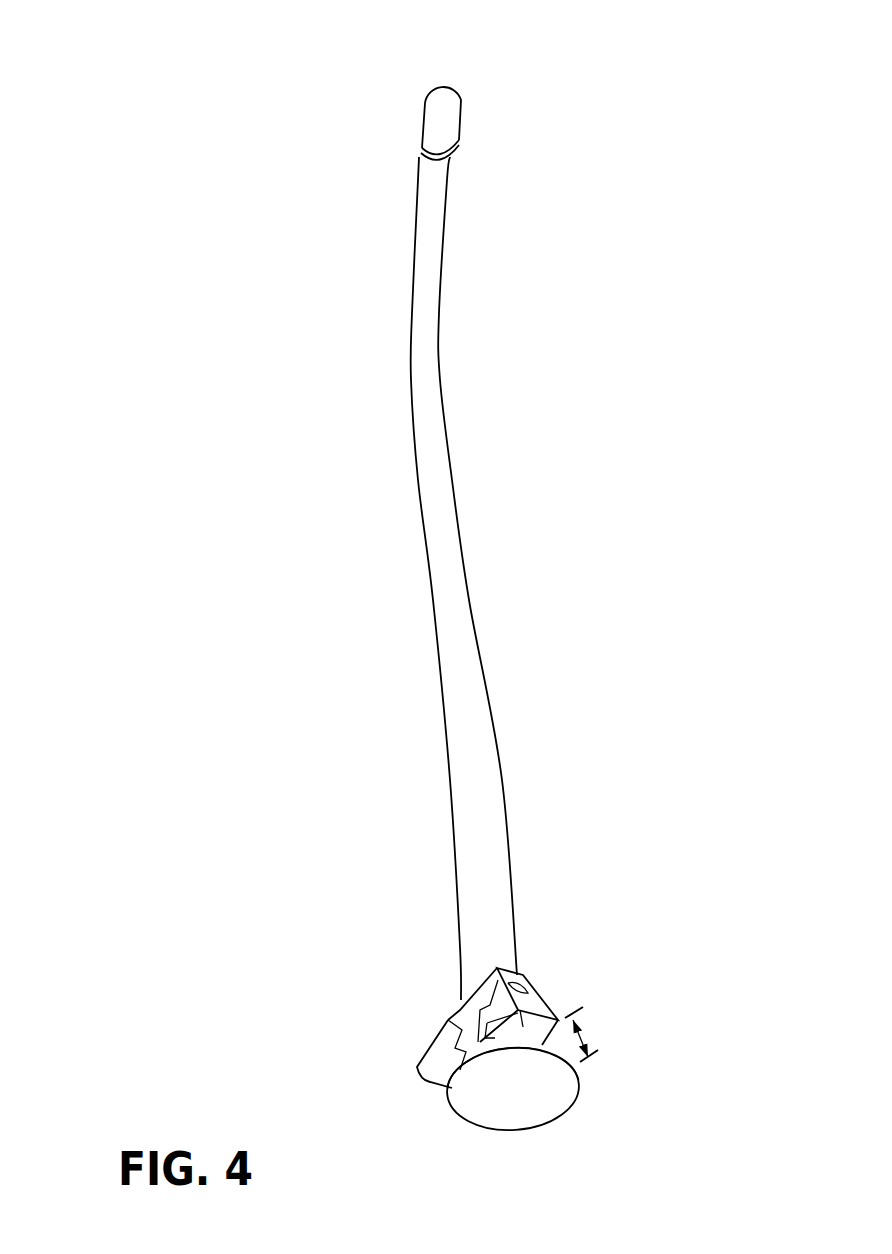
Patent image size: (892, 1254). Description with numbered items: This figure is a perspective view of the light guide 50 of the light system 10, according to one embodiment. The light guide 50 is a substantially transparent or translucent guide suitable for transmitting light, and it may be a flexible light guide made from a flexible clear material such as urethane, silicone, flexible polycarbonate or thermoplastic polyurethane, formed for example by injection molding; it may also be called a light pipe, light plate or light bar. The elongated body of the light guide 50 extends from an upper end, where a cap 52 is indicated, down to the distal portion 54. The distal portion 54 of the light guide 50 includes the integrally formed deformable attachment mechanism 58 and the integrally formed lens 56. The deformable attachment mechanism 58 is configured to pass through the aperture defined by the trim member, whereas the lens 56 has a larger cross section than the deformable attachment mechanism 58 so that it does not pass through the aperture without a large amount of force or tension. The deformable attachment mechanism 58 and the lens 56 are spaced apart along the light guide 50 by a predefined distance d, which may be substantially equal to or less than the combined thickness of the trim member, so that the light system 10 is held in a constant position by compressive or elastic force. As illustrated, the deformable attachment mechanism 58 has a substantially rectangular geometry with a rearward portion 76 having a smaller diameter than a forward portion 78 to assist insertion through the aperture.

The light system 10 is at (553, 338).
The light guide 50 is at (443, 573).
The mast tip cap 52 is at (452, 80).
The distal portion 54 is at (550, 998).
The lens 56 is at (497, 1098).
The deformable attachment mechanism 58 is at (432, 1053).
The rearward portion 76 is at (525, 965).
The forward portion 78 is at (555, 1032).
The predefined distance d is at (578, 1036).